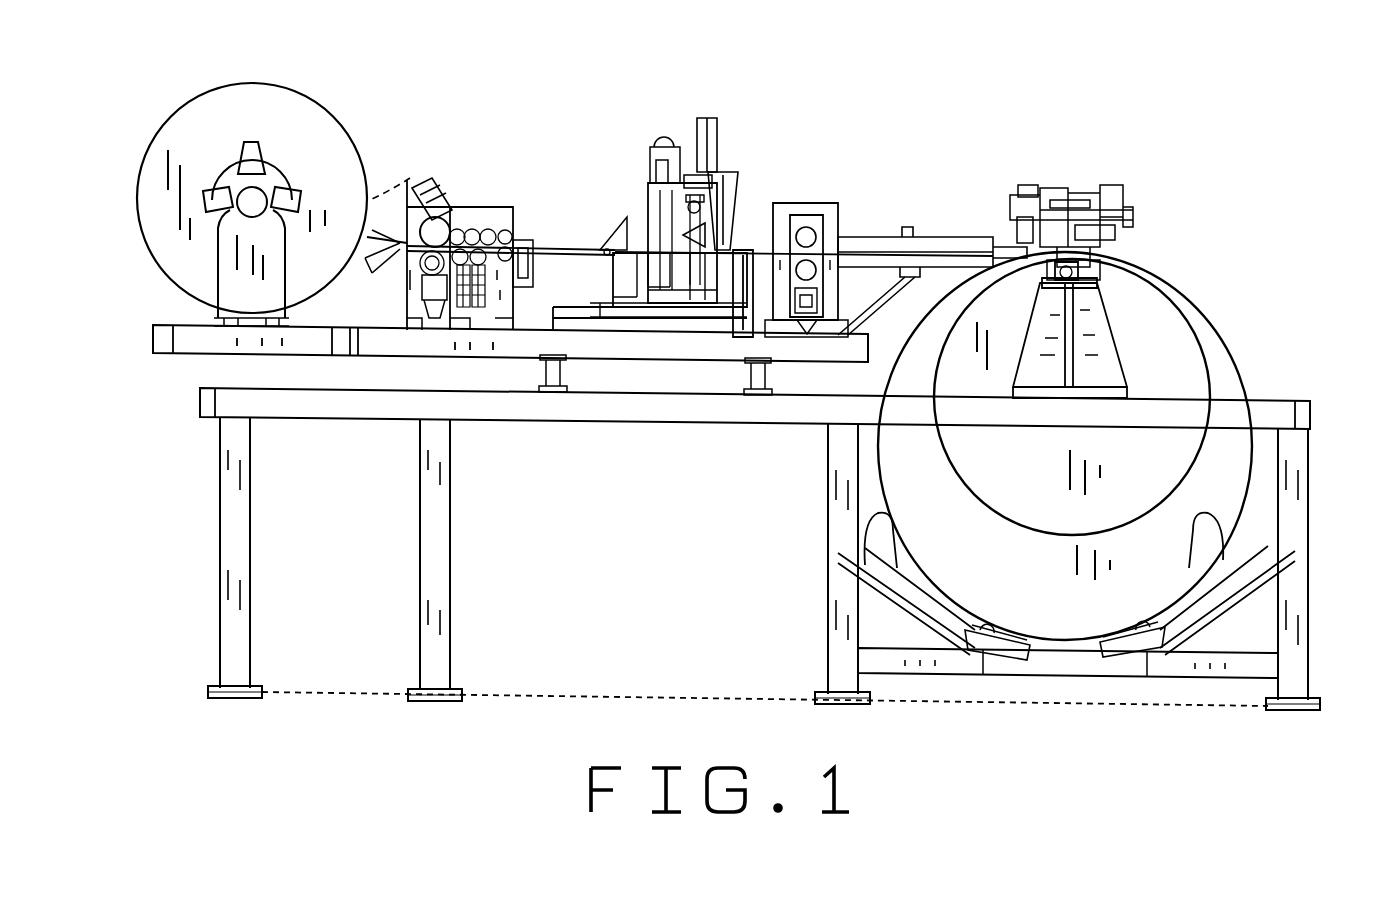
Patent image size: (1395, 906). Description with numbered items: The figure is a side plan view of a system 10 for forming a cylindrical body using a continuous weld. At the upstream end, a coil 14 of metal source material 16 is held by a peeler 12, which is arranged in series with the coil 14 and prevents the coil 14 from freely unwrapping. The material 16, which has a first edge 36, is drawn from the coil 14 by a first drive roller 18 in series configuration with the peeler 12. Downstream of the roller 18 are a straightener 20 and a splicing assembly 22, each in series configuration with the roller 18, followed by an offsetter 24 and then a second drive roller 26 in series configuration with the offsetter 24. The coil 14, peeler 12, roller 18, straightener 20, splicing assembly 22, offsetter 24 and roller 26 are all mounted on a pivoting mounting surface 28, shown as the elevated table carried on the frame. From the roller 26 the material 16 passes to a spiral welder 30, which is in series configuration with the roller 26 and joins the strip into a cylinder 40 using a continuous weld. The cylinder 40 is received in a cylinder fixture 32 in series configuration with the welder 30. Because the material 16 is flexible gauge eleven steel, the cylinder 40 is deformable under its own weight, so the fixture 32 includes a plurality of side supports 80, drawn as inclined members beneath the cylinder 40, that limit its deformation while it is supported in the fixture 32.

The system 10 is at (1146, 146).
The peeler 12 is at (415, 178).
The coil 14 is at (326, 106).
The metal source material 16 is at (333, 177).
The first drive roller 18 is at (444, 222).
The straightener 20 is at (476, 230).
The splicing assembly 22 is at (733, 136).
The offsetter 24 is at (752, 250).
The second drive roller 26 is at (817, 203).
The pivoting mounting surface 28 is at (152, 341).
The spiral welder 30 is at (1146, 228).
The cylinder fixture 32 is at (793, 549).
The first edge 36 is at (562, 252).
The cylinder 40 is at (1270, 359).
The side supports 80 is at (838, 567).